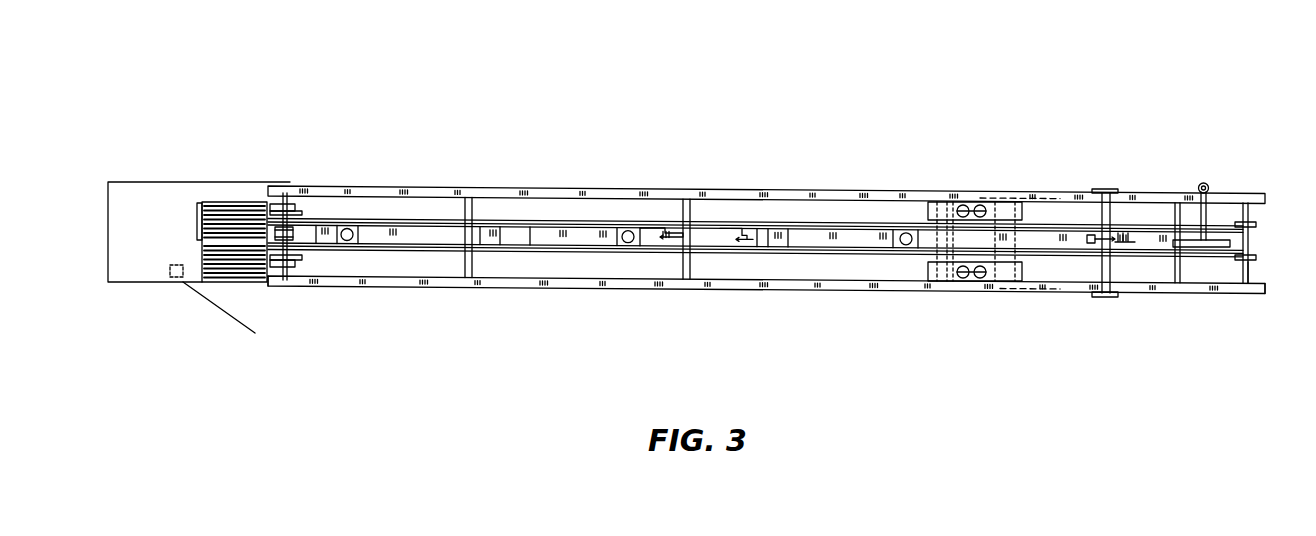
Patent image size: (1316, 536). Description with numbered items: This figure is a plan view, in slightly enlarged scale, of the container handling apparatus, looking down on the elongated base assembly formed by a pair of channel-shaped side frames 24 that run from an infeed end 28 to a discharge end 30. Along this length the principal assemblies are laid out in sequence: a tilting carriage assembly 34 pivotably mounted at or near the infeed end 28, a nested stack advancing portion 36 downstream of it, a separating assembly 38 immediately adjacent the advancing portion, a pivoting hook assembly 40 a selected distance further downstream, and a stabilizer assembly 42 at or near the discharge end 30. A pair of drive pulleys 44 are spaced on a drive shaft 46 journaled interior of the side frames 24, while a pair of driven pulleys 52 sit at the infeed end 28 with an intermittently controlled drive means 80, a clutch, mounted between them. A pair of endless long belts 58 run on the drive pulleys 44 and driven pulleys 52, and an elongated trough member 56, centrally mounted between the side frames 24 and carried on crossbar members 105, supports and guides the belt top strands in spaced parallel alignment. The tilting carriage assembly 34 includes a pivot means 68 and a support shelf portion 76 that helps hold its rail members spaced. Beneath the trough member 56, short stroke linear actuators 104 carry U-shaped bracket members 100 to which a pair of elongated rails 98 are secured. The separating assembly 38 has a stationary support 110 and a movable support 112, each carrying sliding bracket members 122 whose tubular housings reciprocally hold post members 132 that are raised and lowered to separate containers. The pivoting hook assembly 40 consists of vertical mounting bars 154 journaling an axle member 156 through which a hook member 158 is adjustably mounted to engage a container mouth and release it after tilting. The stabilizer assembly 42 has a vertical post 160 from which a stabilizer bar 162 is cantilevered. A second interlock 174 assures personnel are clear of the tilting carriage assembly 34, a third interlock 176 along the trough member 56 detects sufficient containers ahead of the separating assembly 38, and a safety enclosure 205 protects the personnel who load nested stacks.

The side frame 24 is at (863, 190).
The infeed end 28 is at (293, 290).
The discharge end 30 is at (1253, 296).
The tilting carriage assembly 34 is at (188, 100).
The nested stack advancing portion 36 is at (456, 98).
The separating assembly 38 is at (937, 106).
The pivoting hook assembly 40 is at (1117, 118).
The stabilizer assembly 42 is at (1245, 128).
The drive pulley 44 is at (1256, 225).
The drive shaft 46 is at (1250, 270).
The driven pulley 52 is at (300, 250).
The trough member 56 is at (538, 220).
The long belt 58 is at (771, 222).
The pivot means 68 is at (283, 186).
The support shelf portion 76 is at (234, 284).
The intermittently controlled drive means 80 is at (292, 232).
The elongated rail 98 is at (585, 222).
The U-shaped bracket member 100 is at (368, 247).
The short stroke linear actuator 104 is at (352, 230).
The crossbar member 105 is at (468, 196).
The stationary support 110 is at (930, 262).
The movable support 112 is at (1020, 265).
The sliding bracket member 122 is at (950, 272).
The post member 132 is at (961, 205).
The mounting bar 154 is at (1104, 190).
The axle member 156 is at (1110, 263).
The hook member 158 is at (1092, 245).
The vertical post 160 is at (1207, 186).
The stabilizer bar 162 is at (1216, 240).
The second interlock 174 is at (176, 265).
The third interlock 176 is at (727, 225).
The safety enclosure 205 is at (176, 182).